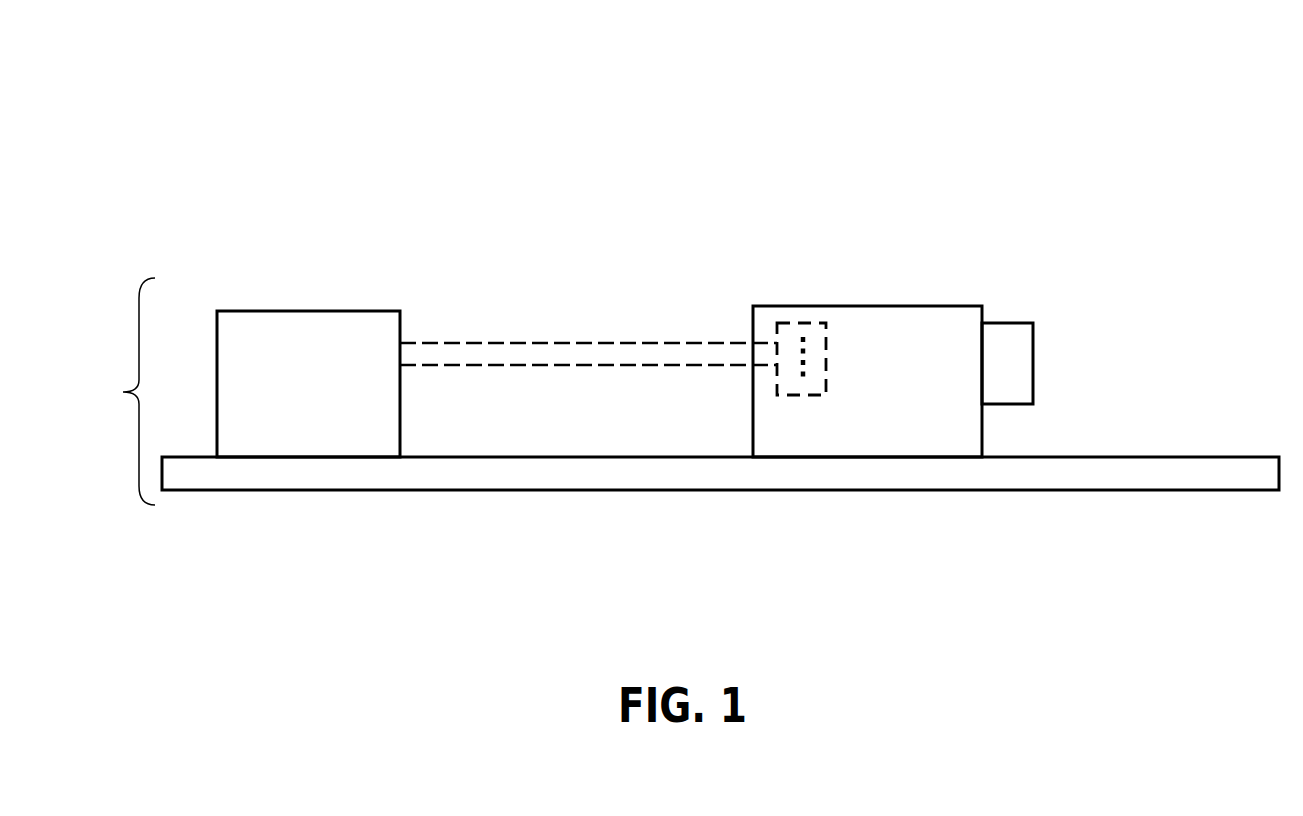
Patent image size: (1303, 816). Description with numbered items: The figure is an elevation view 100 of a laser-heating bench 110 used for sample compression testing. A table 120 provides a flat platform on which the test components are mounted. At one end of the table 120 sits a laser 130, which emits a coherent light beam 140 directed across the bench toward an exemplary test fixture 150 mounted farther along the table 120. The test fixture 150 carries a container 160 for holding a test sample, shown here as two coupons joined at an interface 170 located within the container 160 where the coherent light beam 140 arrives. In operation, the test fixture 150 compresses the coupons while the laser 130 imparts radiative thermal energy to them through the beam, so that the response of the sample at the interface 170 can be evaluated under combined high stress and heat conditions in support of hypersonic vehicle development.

The elevation view 100 is at (1100, 148).
The laser-heating bench 110 is at (106, 391).
The table 120 is at (1147, 457).
The laser 130 is at (320, 384).
The coherent light beam 140 is at (573, 341).
The test fixture 150 is at (937, 421).
The container 160 is at (800, 322).
The interface 170 is at (808, 350).